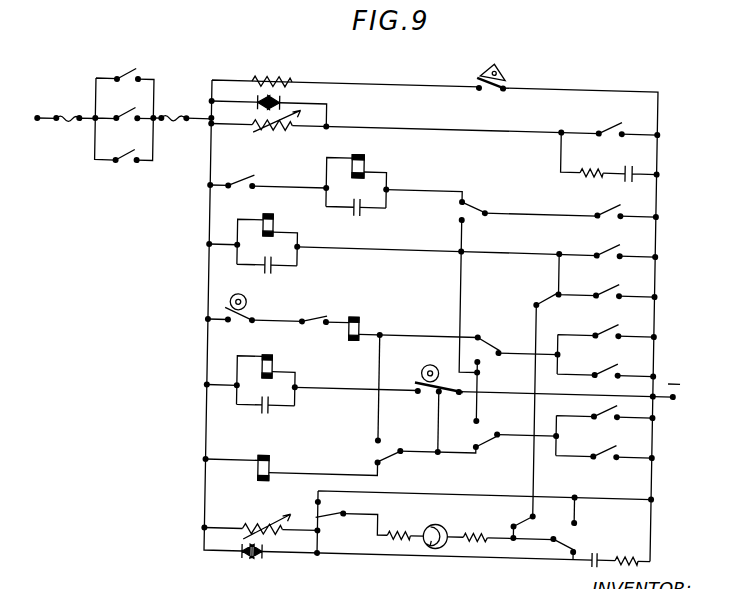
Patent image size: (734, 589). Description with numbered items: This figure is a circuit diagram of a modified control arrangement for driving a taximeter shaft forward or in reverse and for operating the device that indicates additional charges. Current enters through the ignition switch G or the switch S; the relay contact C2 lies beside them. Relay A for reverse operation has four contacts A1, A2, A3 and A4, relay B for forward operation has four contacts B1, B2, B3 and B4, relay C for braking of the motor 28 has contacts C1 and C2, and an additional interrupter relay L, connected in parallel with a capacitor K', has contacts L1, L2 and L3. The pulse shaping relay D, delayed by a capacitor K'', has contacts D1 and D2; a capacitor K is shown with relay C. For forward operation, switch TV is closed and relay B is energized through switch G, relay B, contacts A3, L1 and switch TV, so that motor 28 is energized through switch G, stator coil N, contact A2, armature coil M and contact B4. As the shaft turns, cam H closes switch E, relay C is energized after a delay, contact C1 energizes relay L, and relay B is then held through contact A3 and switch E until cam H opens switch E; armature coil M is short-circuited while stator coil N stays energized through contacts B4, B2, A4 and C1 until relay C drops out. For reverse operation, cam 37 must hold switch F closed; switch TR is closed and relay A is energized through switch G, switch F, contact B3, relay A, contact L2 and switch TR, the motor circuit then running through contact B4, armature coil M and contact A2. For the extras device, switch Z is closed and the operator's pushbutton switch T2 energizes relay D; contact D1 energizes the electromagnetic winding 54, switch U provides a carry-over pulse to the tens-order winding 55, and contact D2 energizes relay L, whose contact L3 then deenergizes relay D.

The ignition switch G is at (127, 73).
The switch S is at (128, 114).
The relay contact C2 is at (128, 157).
The electromagnetic winding 55 is at (284, 79).
The electromagnetic winding 54 is at (275, 132).
The switch U is at (504, 67).
The relay contact D1 is at (607, 119).
The switch Z is at (248, 178).
The pulse shaping relay D is at (365, 159).
The capacitor K'' is at (368, 216).
The interrupter relay L is at (276, 216).
The capacitor K' is at (279, 276).
The cam 37 is at (239, 294).
The switch F is at (255, 315).
The relay contact B3 is at (318, 313).
The relay A is at (364, 315).
The relay C is at (277, 363).
The cam H is at (430, 362).
The switch E is at (439, 397).
The capacitor K is at (250, 416).
The relay B is at (276, 466).
The relay contact A3 is at (390, 455).
The relay contact L1 is at (488, 437).
The stator coil N is at (263, 519).
The relay contact A2 is at (334, 516).
The armature coil M is at (405, 524).
The motor 28 is at (440, 543).
The relay contact B2 is at (532, 513).
The relay contact B4 is at (573, 536).
The relay contact L3 is at (476, 202).
The relay contact L2 is at (492, 341).
The relay contact A4 is at (550, 290).
The contact T2 is at (610, 200).
The relay contact D2 is at (610, 240).
The relay contact C1 is at (610, 280).
The switch TR is at (610, 320).
The relay contact A1 is at (611, 360).
The switch TV is at (608, 403).
The relay contact B1 is at (608, 449).